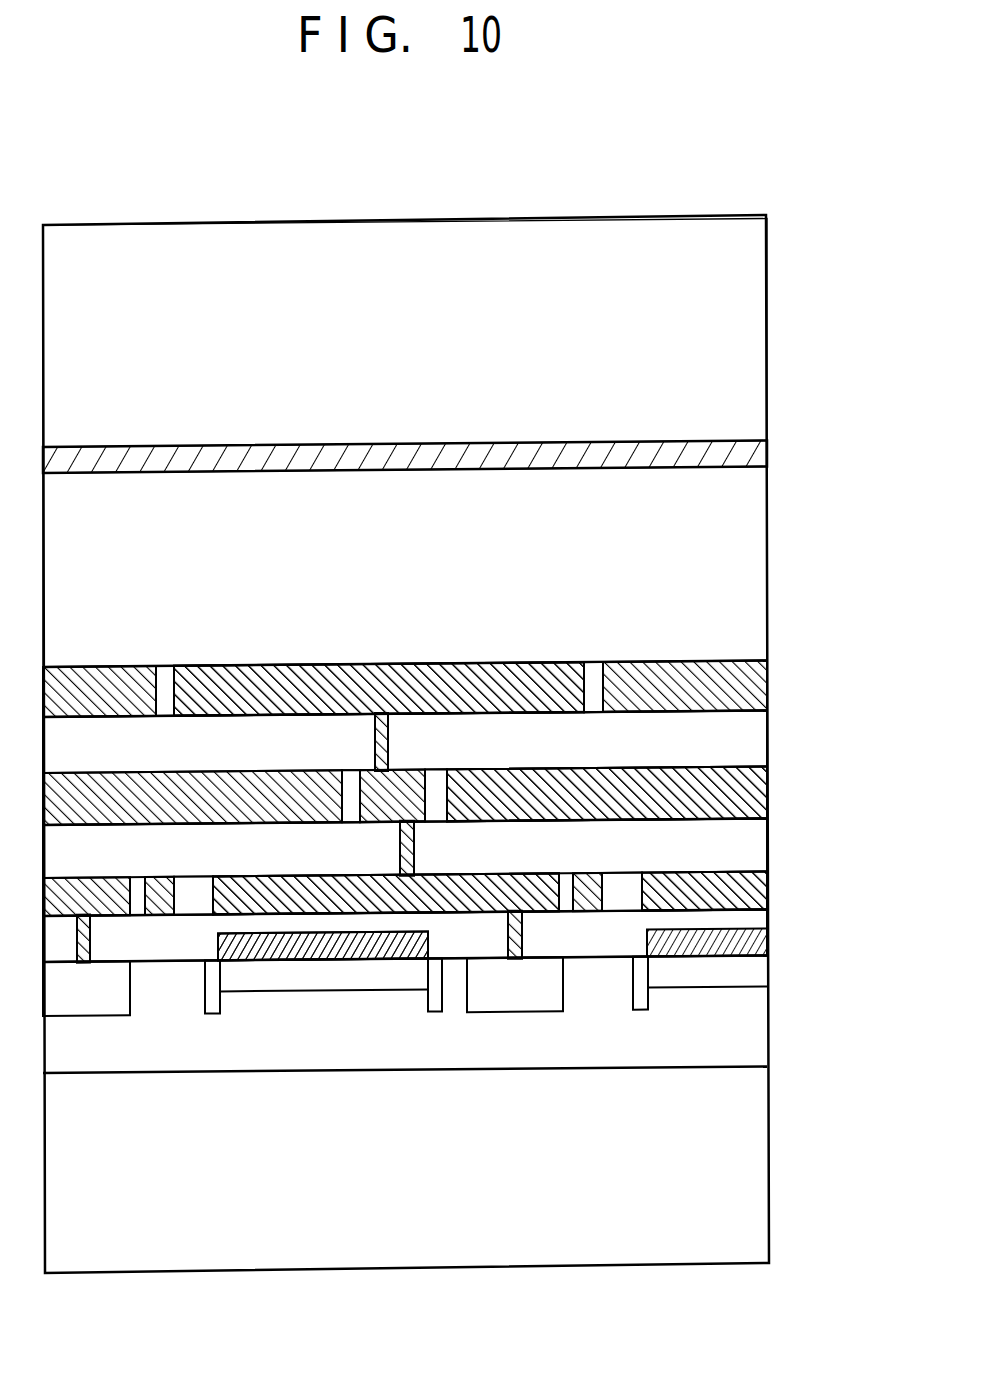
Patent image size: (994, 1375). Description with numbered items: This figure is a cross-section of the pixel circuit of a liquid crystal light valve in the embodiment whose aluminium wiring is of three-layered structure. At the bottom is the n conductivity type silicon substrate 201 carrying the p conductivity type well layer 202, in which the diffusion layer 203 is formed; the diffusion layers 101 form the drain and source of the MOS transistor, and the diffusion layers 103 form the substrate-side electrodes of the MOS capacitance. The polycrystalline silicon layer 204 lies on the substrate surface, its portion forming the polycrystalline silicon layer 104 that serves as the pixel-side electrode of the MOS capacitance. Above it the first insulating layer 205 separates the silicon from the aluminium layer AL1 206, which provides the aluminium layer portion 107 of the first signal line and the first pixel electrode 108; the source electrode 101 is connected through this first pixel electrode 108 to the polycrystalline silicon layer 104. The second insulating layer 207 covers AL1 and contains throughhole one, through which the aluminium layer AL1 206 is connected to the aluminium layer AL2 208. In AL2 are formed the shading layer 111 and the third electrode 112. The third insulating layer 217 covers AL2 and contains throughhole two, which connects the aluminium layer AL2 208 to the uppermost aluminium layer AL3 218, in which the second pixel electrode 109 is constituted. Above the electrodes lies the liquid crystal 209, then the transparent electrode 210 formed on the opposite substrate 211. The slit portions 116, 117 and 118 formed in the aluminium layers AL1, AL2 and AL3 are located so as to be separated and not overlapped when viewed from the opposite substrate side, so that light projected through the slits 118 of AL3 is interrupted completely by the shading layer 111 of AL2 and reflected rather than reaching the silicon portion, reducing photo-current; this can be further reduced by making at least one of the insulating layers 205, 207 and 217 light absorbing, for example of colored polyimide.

The diffusion layer 101 is at (520, 1012).
The diffusion layer of the MOS capacitance 103 is at (367, 997).
The polycrystalline silicon layer of the MOS capacitance 104 is at (413, 930).
The aluminium layer portion of the first signal line 107 is at (164, 874).
The first pixel electrode 108 is at (328, 874).
The second pixel electrode 109 is at (464, 664).
The shading layer 111 is at (482, 778).
The third electrode 112 is at (416, 770).
The slit portion 116 is at (623, 886).
The slit portion 117 is at (348, 784).
The slit portion 118 is at (594, 668).
The n conductivity type silicon substrate 201 is at (770, 1152).
The p conductivity type well layer 202 is at (768, 1033).
The diffusion layer 203 is at (767, 975).
The polycrystalline silicon layer 204 is at (767, 943).
The first insulating layer 205 is at (767, 917).
The aluminium layer AL1 206 is at (767, 878).
The second insulating layer 207 is at (767, 842).
The aluminium layer AL2 208 is at (767, 793).
The liquid crystal 209 is at (767, 547).
The transparent electrode 210 is at (767, 452).
The opposite substrate 211 is at (767, 345).
The third insulating layer 217 is at (767, 732).
The aluminium layer AL3 218 is at (767, 683).